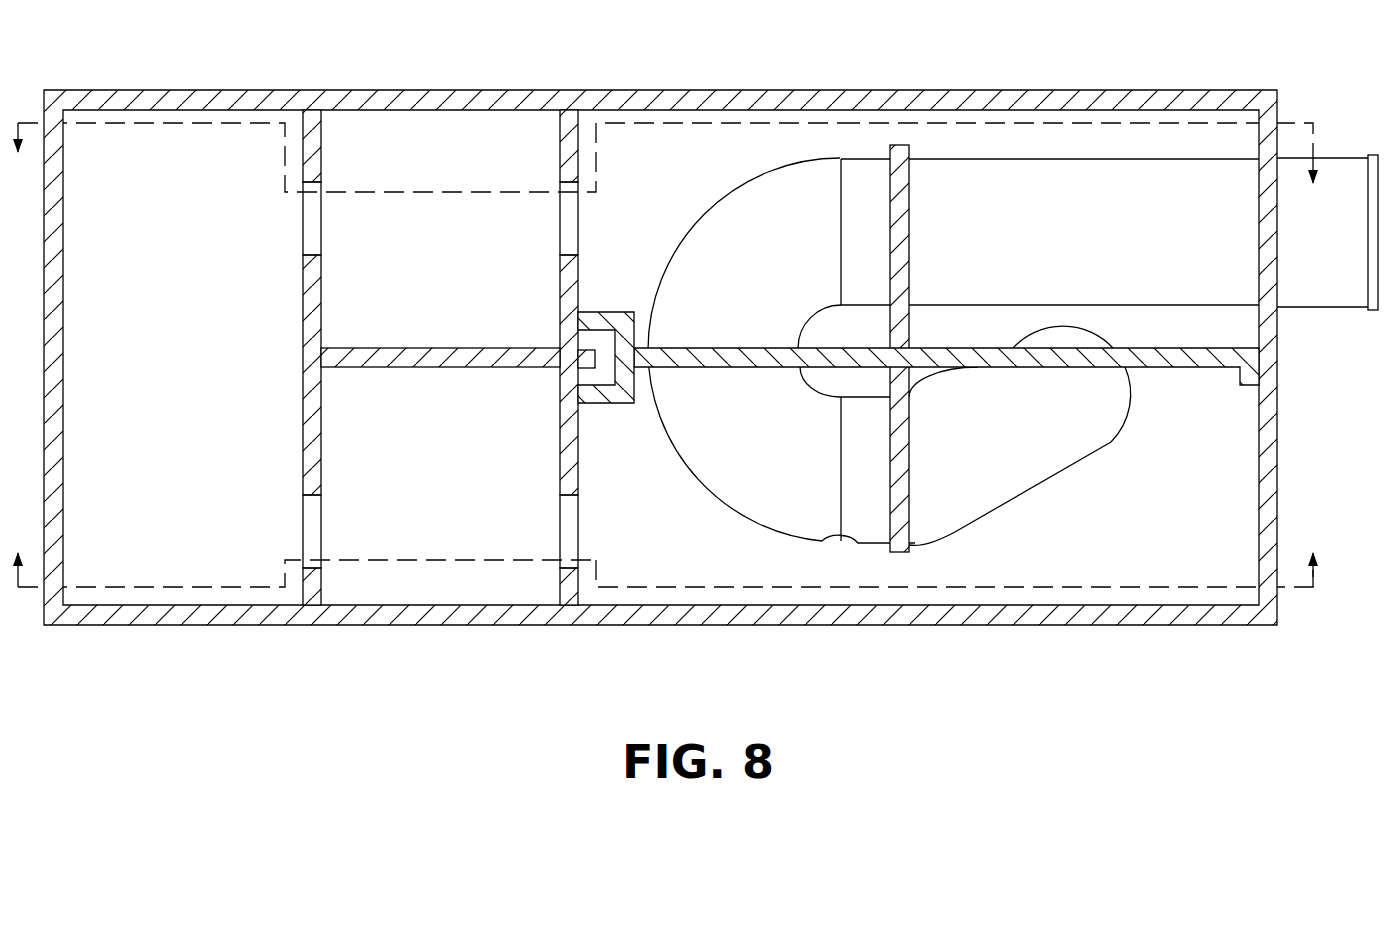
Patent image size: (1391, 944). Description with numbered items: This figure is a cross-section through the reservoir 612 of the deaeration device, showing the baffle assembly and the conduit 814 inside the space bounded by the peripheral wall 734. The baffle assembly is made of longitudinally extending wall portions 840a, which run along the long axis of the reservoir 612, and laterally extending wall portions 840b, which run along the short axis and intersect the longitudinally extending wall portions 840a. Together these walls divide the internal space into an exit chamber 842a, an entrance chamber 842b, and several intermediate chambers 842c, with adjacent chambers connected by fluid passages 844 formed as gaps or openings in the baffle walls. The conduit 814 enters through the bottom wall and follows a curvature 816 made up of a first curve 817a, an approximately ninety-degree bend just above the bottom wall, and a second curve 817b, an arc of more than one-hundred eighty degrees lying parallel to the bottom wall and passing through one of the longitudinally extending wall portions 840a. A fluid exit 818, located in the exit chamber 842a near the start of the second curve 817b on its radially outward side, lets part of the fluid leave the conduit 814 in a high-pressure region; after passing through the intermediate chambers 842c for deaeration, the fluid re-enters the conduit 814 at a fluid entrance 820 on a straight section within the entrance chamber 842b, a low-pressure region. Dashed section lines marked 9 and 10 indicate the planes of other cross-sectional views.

The reservoir 612 is at (118, 62).
The peripheral wall 734 is at (1155, 92).
The conduit 814 is at (1028, 495).
The curvature 816 is at (690, 212).
The first curve 817a is at (1125, 425).
The second curve 817b is at (705, 490).
The fluid exit 818 is at (836, 546).
The fluid entrance 820 is at (1045, 158).
The longitudinally extending wall portions 840a is at (436, 348).
The laterally extending wall portions 840b is at (303, 279).
The exit chamber 842a is at (605, 470).
The entrance chamber 842b is at (940, 153).
The intermediate chambers 842c is at (150, 357).
The fluid passages 844 is at (293, 228).
The section line 9 is at (666, 556).
The section line 10 is at (665, 171).